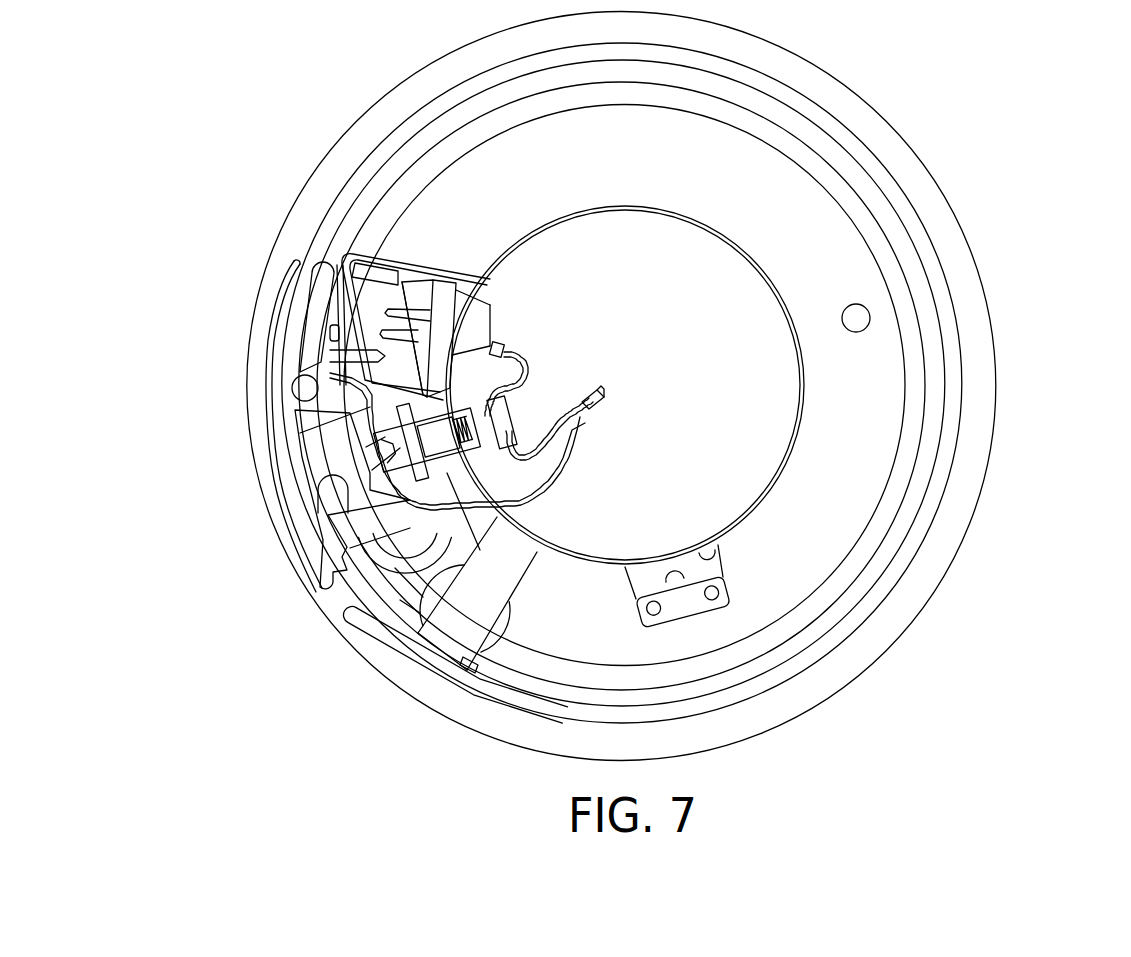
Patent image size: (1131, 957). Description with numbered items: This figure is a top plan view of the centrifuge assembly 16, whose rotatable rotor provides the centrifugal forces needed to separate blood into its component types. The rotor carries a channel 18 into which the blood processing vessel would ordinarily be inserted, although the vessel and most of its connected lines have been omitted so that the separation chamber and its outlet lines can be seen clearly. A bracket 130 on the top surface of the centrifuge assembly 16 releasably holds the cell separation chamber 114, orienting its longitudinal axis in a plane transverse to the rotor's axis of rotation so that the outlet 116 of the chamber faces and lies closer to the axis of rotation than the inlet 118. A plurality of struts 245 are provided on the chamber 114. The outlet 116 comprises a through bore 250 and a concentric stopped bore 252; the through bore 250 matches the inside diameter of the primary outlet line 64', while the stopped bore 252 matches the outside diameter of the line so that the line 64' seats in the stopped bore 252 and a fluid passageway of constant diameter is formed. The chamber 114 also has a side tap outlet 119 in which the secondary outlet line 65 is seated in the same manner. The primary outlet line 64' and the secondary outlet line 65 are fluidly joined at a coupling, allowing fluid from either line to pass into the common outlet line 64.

The centrifuge assembly 16 is at (1022, 328).
The channel 18 is at (947, 280).
The common outlet line 64 is at (574, 415).
The primary outlet line 64' is at (477, 430).
The secondary outlet line 65 is at (550, 492).
The cell separation chamber 114 is at (366, 302).
The outlet 116 is at (507, 350).
The inlet 118 is at (297, 312).
The side tap outlet 119 is at (330, 333).
The bracket 130 is at (419, 273).
The struts 245 is at (410, 316).
The through bore 250 is at (578, 421).
The stopped bore 252 is at (480, 462).